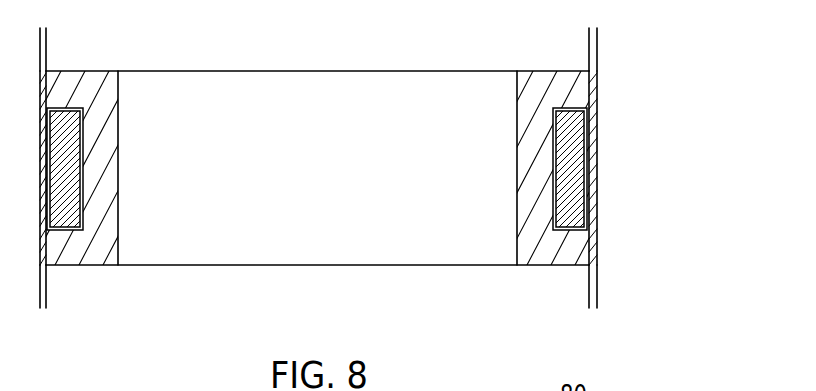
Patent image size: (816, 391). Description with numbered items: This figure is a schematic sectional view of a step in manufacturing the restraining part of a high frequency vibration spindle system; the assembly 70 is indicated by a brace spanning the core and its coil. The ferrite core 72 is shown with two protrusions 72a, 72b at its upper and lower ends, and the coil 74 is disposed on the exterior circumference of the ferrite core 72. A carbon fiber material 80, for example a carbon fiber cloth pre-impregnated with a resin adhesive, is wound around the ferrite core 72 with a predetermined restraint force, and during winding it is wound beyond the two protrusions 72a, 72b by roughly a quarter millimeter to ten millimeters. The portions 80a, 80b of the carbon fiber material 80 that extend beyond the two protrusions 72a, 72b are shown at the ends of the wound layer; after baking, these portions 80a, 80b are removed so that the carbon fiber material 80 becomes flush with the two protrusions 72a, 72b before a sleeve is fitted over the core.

The electromagnetic assembly 70 is at (651, 145).
The ferrite core 72 is at (532, 184).
The protrusion 72a is at (578, 90).
The protrusion 72b is at (565, 262).
The coil 74 is at (568, 212).
The carbon fiber material 80 is at (597, 117).
The portion of the carbon fiber material 80a is at (597, 34).
The portion of the carbon fiber material 80b is at (597, 299).